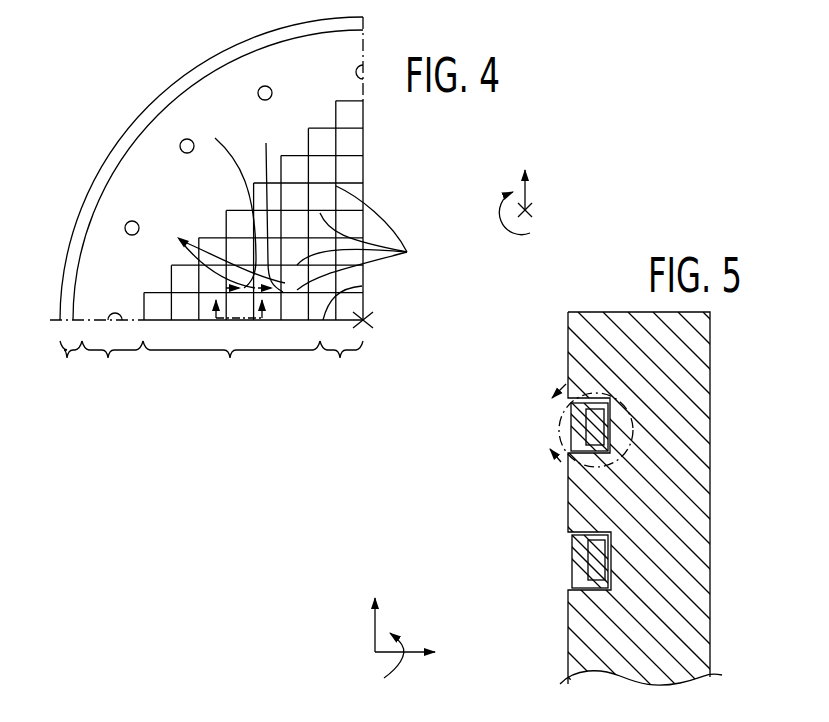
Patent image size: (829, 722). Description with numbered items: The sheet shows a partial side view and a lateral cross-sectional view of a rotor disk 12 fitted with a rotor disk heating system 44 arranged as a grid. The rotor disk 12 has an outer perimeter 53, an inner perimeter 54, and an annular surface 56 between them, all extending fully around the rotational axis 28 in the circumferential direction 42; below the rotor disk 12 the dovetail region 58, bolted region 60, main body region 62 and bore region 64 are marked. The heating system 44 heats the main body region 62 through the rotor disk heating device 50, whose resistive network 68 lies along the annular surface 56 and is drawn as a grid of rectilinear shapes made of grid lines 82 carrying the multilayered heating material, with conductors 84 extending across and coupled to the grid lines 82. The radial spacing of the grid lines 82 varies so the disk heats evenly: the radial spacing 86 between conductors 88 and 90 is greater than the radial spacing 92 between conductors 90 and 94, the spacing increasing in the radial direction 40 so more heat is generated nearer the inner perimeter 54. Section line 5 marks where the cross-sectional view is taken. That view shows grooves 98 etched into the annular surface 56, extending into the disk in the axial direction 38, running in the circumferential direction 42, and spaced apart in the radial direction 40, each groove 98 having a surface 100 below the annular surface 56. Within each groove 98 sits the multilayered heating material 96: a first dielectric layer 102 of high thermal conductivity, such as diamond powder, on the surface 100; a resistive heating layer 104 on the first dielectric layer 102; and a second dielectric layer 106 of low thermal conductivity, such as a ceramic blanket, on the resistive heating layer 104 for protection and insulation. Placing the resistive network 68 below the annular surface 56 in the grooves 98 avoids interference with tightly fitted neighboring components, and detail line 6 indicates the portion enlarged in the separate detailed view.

In FIG. 4, the rotor disk 12 is at (80, 136).
In FIG. 5, the rotor disk 12 is at (710, 493).
In FIG. 4, the outer perimeter 53 is at (150, 108).
In FIG. 4, the annular surface 56 is at (352, 114).
In FIG. 5, the annular surface 56 is at (568, 326).
In FIG. 4, the resistive network 68 is at (348, 148).
In FIG. 4, the rotor disk heating device 50 is at (374, 192).
In FIG. 5, the rotor disk heating device 50 is at (542, 576).
In FIG. 4, the rotor disk heating system 44 is at (412, 274).
In FIG. 5, the rotor disk heating system 44 is at (460, 494).
In FIG. 4, the conductors 84 is at (364, 238).
In FIG. 4, the inner perimeter 54 is at (362, 286).
In FIG. 4, the rotational axis 28 is at (371, 321).
In FIG. 4, the conductor 90 is at (228, 199).
In FIG. 4, the conductor 94 is at (268, 203).
In FIG. 4, the radial spacing 92 is at (283, 292).
In FIG. 4, the conductor 88 is at (172, 268).
In FIG. 4, the grid lines 82 is at (214, 237).
In FIG. 4, the radial spacing 86 is at (226, 286).
In FIG. 4, the section line 5- 5 is at (240, 303).
In FIG. 4, the dovetail region 58 is at (67, 358).
In FIG. 4, the bolted region 60 is at (108, 358).
In FIG. 4, the main body region 62 is at (230, 358).
In FIG. 4, the bore region 64 is at (340, 358).
In FIG. 4, the axial direction 38 is at (533, 212).
In FIG. 5, the axial direction 38 is at (410, 656).
In FIG. 4, the radial direction 40 is at (527, 194).
In FIG. 5, the radial direction 40 is at (374, 630).
In FIG. 4, the circumferential direction 42 is at (503, 215).
In FIG. 5, the circumferential direction 42 is at (406, 645).
In FIG. 5, the multilayered heating material 96 is at (560, 420).
In FIG. 5, the grooves 98 is at (613, 440).
In FIG. 5, the surface 100 is at (612, 428).
In FIG. 5, the first dielectric layer 102 is at (601, 398).
In FIG. 5, the resistive heating layer 104 is at (568, 456).
In FIG. 5, the second dielectric layer 106 is at (572, 400).
In FIG. 5, the detail line 6- 6 is at (584, 425).